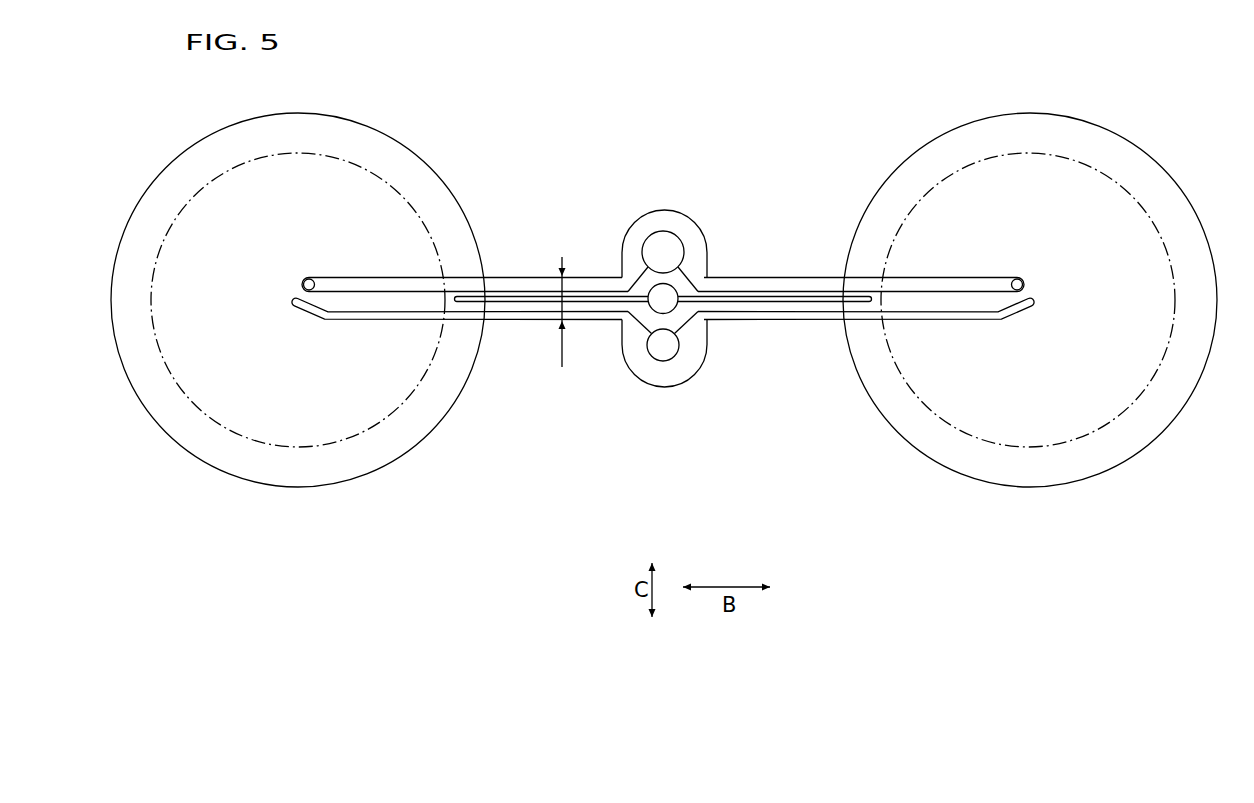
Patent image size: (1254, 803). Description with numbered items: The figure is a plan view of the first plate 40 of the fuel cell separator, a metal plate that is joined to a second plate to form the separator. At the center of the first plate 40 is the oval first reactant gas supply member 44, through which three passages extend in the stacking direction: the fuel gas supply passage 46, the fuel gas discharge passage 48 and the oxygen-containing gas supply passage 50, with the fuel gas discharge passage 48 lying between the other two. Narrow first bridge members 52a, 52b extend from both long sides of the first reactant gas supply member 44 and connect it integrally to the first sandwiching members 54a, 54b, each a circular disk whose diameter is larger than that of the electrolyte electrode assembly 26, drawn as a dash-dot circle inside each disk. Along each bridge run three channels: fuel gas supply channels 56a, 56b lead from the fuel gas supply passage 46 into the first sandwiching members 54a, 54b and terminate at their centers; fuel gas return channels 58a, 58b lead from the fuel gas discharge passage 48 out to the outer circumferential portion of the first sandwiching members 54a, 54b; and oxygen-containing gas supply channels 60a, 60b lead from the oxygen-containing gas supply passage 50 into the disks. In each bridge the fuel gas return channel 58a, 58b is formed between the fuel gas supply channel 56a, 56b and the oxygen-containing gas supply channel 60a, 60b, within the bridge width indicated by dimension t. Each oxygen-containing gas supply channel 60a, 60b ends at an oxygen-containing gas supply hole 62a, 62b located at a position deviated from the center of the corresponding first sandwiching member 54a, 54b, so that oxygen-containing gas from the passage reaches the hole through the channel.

The electrolyte electrode assembly 26 is at (1070, 156).
The first plate 40 is at (719, 90).
The first reactant gas supply member 44 is at (647, 210).
The fuel gas supply passage 46 is at (656, 352).
The fuel gas discharge passage 48 is at (667, 302).
The oxygen-containing gas supply passage 50 is at (672, 250).
The first bridge member 52a is at (788, 326).
The first bridge member 52b is at (578, 271).
The first sandwiching member 54a is at (1134, 142).
The first sandwiching member 54b is at (415, 150).
The fuel gas supply channel 56a is at (965, 320).
The fuel gas supply channel 56b is at (358, 320).
The fuel gas return channel 58a is at (833, 298).
The fuel gas return channel 58b is at (510, 301).
The oxygen-containing gas supply channel 60a is at (948, 283).
The oxygen-containing gas supply channel 60b is at (518, 284).
The oxygen-containing gas supply hole 62a is at (1017, 280).
The oxygen-containing gas supply hole 62b is at (307, 278).